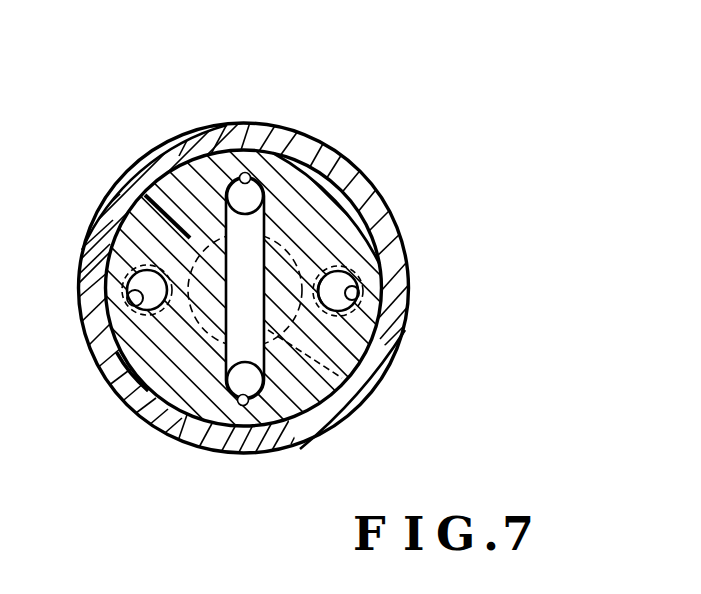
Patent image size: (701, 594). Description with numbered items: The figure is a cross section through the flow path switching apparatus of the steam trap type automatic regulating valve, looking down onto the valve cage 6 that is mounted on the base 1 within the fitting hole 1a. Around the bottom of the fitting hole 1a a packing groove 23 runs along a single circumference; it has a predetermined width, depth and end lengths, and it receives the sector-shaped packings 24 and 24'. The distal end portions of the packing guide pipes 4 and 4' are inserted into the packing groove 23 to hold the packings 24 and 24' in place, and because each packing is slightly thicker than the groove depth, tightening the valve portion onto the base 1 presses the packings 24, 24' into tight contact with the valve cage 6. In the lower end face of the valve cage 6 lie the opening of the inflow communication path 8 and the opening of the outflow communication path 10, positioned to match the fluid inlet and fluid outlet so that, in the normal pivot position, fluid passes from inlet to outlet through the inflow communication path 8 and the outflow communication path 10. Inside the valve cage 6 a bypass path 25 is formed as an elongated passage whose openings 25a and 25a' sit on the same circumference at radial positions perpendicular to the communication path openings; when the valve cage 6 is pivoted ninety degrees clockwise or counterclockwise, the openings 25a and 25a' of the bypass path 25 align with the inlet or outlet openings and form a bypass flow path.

The base 1 is at (394, 208).
The fitting hole 1a is at (383, 353).
The packing guide pipe 4 is at (100, 290).
The packing guide pipe 4' is at (387, 273).
The valve cage 6 is at (91, 221).
The inflow communication path 8 is at (113, 343).
The outflow communication path 10 is at (355, 300).
The packing groove 23 is at (287, 353).
The packing 24 is at (161, 165).
The packing 24' is at (326, 179).
The bypass path 25 is at (190, 412).
The opening of bypass path 25a is at (260, 141).
The opening of bypass path 25a' is at (234, 444).